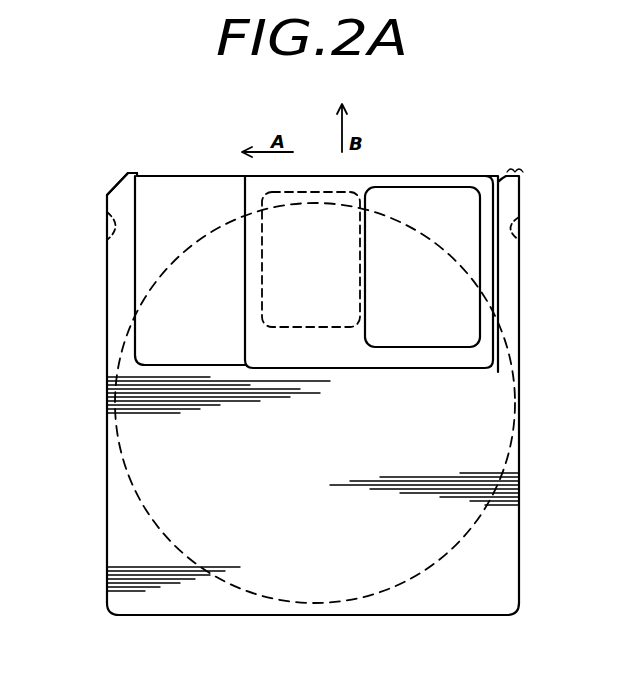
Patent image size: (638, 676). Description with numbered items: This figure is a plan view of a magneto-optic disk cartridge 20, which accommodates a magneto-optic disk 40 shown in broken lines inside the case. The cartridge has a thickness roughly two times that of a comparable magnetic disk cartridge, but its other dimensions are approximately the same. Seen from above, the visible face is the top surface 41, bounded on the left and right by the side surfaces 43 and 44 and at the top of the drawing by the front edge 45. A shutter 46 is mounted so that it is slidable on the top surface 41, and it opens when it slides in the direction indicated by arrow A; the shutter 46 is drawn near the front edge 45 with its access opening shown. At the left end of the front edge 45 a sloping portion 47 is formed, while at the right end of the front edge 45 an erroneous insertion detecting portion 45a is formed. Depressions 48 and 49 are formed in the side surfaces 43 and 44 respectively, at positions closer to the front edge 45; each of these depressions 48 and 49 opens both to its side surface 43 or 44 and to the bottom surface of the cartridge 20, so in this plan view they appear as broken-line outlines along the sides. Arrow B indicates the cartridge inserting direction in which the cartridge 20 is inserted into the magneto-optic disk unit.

The magneto-optic disk cartridge 20 is at (448, 113).
The magneto-optic disk 40 is at (118, 422).
The top surface 41 is at (118, 547).
The side surface 43 is at (107, 325).
The side surface 44 is at (522, 345).
The front edge 45 is at (190, 176).
The erroneous insertion detecting portion 45a is at (517, 168).
The shutter 46 is at (362, 186).
The sloping portion 47 is at (110, 193).
The depression 48 is at (105, 228).
The depression 49 is at (525, 228).